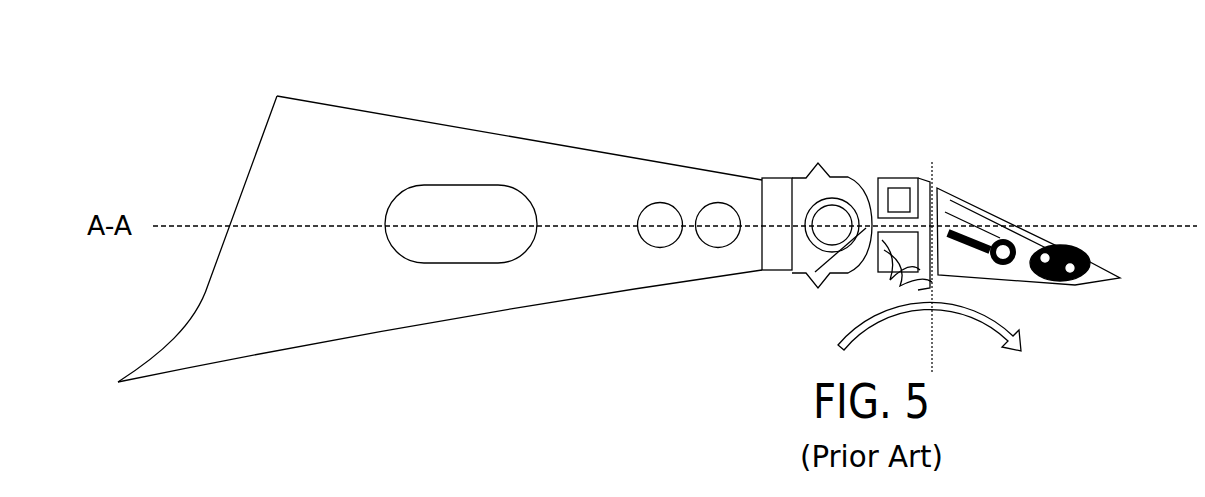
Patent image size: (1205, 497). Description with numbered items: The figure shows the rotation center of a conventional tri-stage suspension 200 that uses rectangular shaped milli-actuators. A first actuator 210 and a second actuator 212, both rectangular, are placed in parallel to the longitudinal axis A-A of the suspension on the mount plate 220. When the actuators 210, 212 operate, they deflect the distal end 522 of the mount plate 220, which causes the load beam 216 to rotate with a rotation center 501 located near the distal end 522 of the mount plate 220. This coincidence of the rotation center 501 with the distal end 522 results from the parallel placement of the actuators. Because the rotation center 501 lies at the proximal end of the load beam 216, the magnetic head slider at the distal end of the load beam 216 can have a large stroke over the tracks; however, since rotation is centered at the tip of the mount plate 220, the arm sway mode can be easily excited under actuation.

The conventional tri-stage suspension 200 is at (764, 95).
The first actuator 210 is at (896, 185).
The second actuator 212 is at (888, 260).
The load beam 216 is at (1017, 218).
The mount plate 220 is at (854, 175).
The rotation center 501 is at (936, 162).
The distal end 522 is at (943, 212).